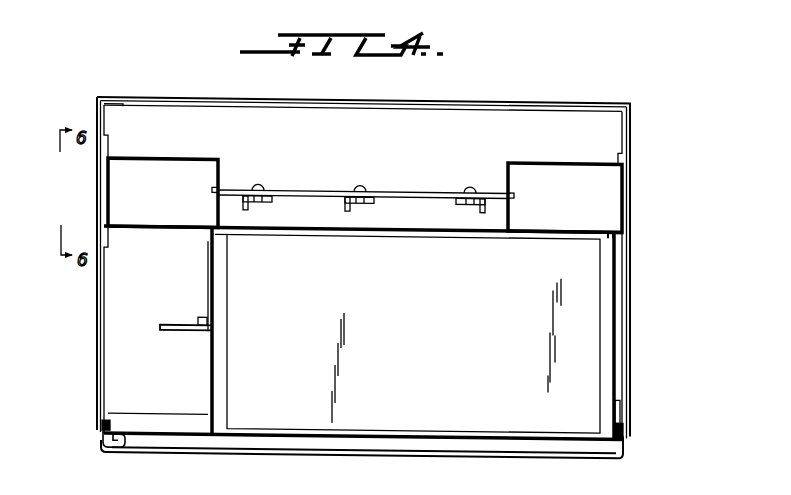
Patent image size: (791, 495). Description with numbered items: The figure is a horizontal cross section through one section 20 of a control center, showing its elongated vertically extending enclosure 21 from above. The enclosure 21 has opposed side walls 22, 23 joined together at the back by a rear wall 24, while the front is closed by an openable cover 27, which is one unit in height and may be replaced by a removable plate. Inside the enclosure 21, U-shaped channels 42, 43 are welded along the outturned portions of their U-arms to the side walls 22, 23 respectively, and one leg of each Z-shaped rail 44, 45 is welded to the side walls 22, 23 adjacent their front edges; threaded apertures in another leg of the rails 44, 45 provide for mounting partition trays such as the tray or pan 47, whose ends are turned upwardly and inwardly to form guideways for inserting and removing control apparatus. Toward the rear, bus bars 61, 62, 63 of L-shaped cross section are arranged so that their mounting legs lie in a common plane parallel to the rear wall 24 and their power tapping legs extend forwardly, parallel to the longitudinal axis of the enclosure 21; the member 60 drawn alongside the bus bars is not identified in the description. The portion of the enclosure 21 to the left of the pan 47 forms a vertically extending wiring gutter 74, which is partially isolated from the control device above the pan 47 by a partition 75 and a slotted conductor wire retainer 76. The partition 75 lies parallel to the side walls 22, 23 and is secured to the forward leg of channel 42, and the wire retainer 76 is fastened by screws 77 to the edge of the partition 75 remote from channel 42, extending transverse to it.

The section 20 is at (601, 87).
The enclosure 21 is at (192, 62).
The side wall 22 is at (97, 324).
The side wall 23 is at (646, 273).
The rear wall 24 is at (532, 100).
The openable cover 27 is at (290, 456).
The U-shaped channel 42 is at (205, 128).
The U-shaped channel 43 is at (567, 135).
The Z-shaped rail 44 is at (110, 417).
The Z-shaped rail 45 is at (614, 410).
The partition tray 47 is at (407, 334).
The support rail 60 is at (363, 194).
The bus bar 61 is at (256, 201).
The bus bar 62 is at (354, 204).
The bus bar 63 is at (477, 204).
The wiring gutter 74 is at (108, 340).
The partition 75 is at (207, 281).
The slotted conductor wire retainer 76 is at (168, 333).
The screws 77 is at (203, 332).